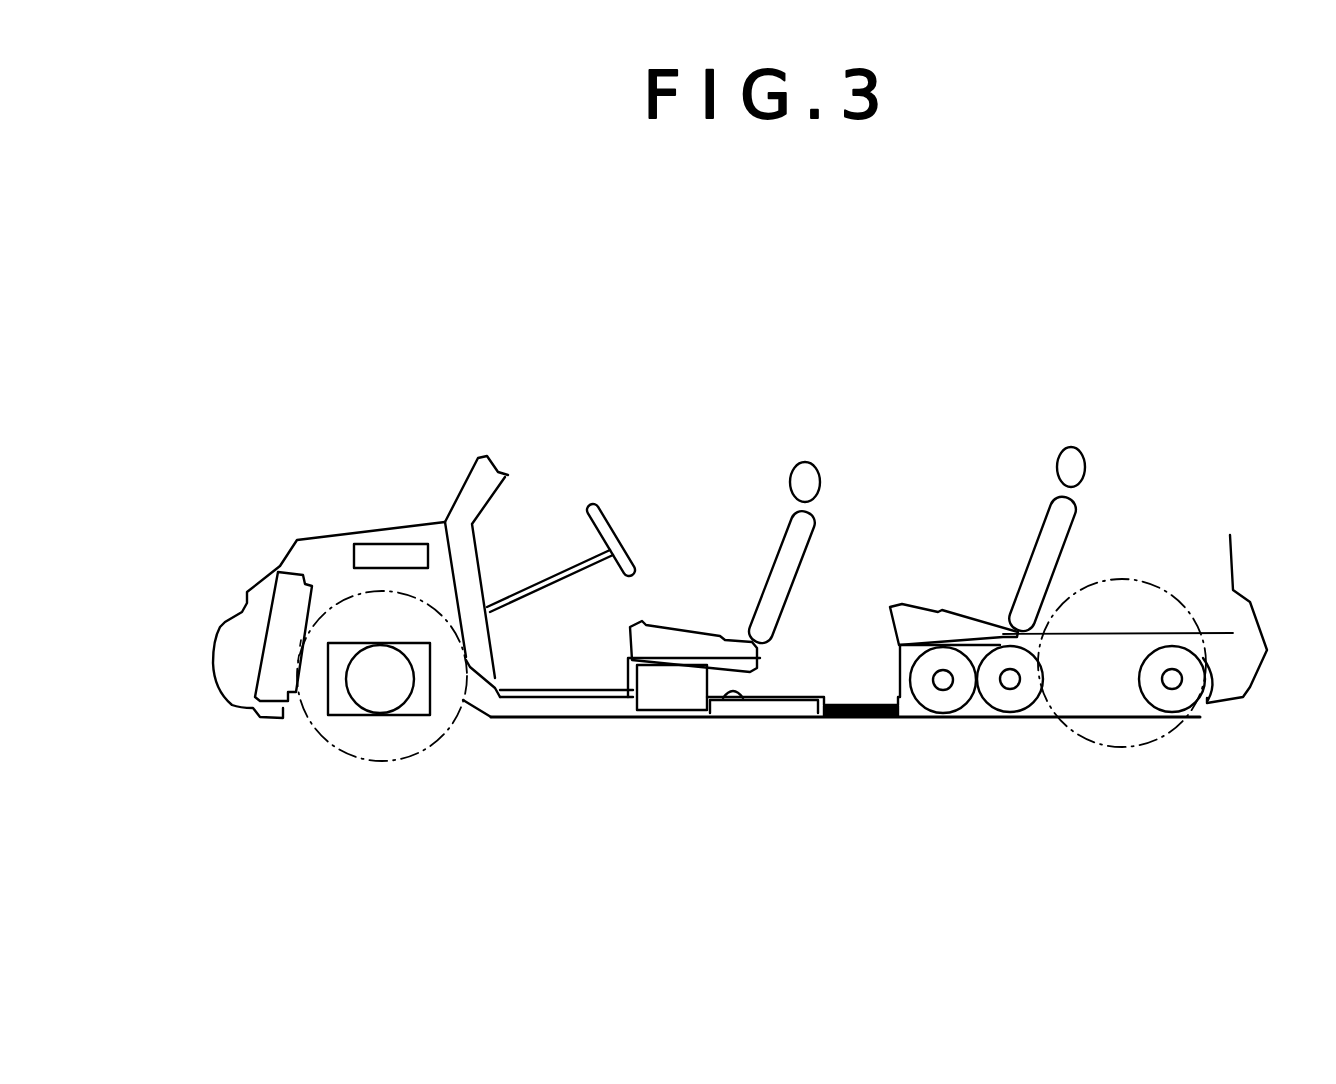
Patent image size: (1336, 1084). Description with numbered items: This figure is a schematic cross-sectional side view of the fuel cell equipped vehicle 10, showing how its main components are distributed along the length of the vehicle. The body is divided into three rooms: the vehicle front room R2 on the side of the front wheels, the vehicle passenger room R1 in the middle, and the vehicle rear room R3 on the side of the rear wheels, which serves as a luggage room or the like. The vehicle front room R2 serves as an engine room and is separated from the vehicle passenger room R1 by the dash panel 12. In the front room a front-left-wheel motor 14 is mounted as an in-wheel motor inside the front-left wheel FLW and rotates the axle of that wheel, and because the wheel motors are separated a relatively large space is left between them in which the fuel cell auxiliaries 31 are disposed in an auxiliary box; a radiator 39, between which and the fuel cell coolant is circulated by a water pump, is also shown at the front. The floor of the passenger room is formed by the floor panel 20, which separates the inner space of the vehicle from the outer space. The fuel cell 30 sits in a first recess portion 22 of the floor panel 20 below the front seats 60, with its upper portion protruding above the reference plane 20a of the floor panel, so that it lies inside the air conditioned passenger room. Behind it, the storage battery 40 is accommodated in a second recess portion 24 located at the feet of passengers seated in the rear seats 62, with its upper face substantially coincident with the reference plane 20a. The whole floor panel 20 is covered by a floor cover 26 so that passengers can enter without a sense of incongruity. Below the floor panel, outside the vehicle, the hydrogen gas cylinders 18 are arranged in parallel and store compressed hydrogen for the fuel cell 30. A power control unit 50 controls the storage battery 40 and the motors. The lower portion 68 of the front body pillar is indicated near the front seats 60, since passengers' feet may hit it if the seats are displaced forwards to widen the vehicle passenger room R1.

The fuel cell equipped vehicle 10 is at (1000, 358).
The dash panel 12 is at (480, 545).
The front-left-wheel motor 14 is at (373, 690).
The hydrogen gas cylinders 18 is at (943, 702).
The floor panel 20 is at (550, 697).
The reference plane 20a is at (728, 697).
The first recess portion 22 is at (676, 707).
The second recess portion 24 is at (833, 702).
The floor cover 26 is at (580, 695).
The fuel cell 30 is at (658, 703).
The fuel cell auxiliaries 31 is at (340, 712).
The radiator 39 is at (273, 673).
The storage battery 40 is at (872, 712).
The power control unit 50 is at (392, 555).
The front seats 60 is at (717, 653).
The rear seats 62 is at (915, 623).
The lower portion of a front body pillar 68 is at (482, 637).
The vehicle passenger room R1 is at (1090, 402).
The vehicle front room R2 is at (322, 565).
The vehicle rear room R3 is at (1167, 565).
The front-left wheel FLW is at (390, 742).